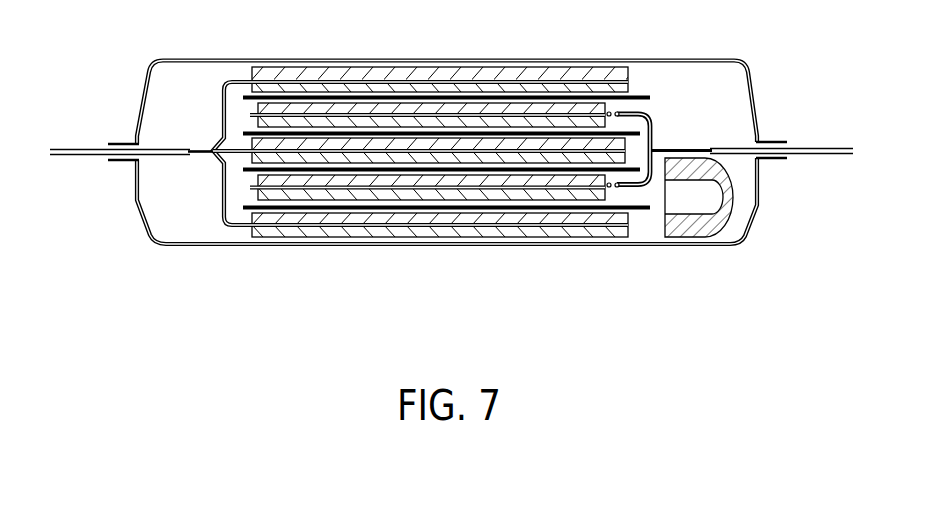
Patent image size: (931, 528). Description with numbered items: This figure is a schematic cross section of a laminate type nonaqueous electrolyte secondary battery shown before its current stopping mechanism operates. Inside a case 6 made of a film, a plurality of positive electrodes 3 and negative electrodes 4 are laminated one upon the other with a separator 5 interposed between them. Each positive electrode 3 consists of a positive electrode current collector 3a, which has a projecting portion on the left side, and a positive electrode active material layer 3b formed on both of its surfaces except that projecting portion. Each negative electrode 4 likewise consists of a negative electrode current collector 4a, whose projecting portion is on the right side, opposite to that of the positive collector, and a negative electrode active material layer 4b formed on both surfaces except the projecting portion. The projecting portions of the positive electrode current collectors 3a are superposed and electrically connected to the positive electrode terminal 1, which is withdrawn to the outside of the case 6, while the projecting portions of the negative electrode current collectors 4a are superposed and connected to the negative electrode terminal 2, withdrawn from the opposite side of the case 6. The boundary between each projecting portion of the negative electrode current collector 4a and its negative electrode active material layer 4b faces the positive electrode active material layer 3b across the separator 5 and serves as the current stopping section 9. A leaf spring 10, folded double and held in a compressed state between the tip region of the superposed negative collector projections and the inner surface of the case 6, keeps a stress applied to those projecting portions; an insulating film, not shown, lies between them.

The positive electrode terminal 1 is at (82, 148).
The negative electrode terminal 2 is at (810, 147).
The positive electrode 3 is at (398, 222).
The positive electrode current collector 3a is at (223, 112).
The positive electrode active material layer 3b is at (587, 82).
The negative electrode 4 is at (545, 175).
The negative electrode current collector 4a is at (652, 130).
The negative electrode active material layer 4b is at (320, 100).
The separator 5 is at (300, 196).
The case 6 is at (430, 76).
The current stopping section 9 is at (619, 112).
The leaf spring 10 is at (702, 244).